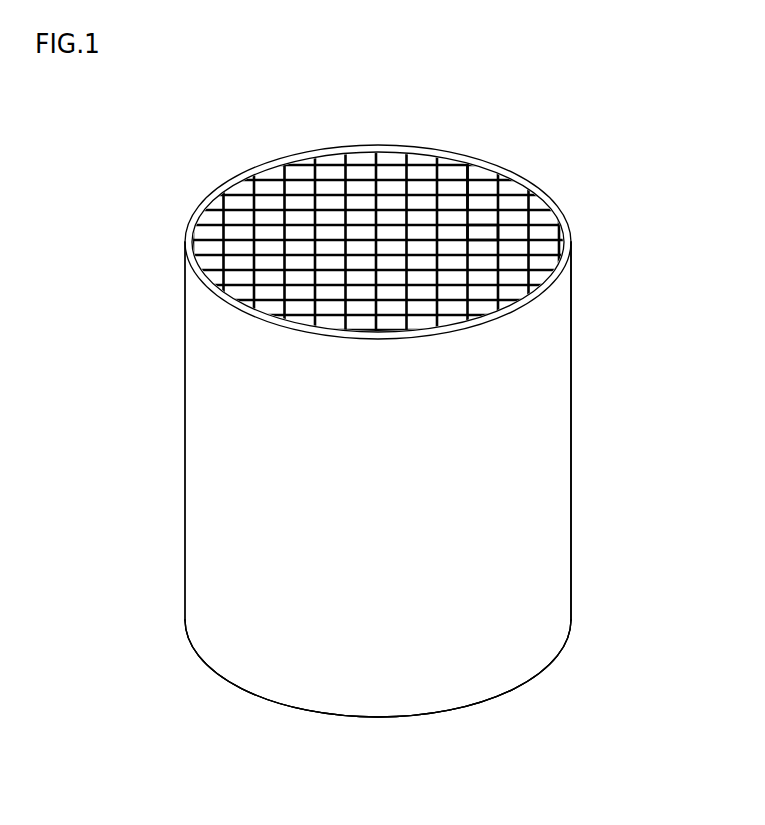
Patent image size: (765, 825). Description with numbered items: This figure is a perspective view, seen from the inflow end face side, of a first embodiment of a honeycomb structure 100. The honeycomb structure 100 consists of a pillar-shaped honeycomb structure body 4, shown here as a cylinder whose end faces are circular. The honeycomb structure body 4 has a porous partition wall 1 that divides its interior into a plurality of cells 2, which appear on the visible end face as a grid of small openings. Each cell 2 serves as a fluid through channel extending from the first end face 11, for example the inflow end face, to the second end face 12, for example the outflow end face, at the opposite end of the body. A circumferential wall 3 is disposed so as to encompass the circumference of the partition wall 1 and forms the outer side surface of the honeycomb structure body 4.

The honeycomb structure 100 is at (707, 97).
The partition wall 1 is at (468, 188).
The cell 2 is at (483, 234).
The circumferential wall 3 is at (542, 373).
The honeycomb structure body 4 is at (583, 279).
The first end face 11 is at (262, 164).
The second end face 12 is at (210, 682).